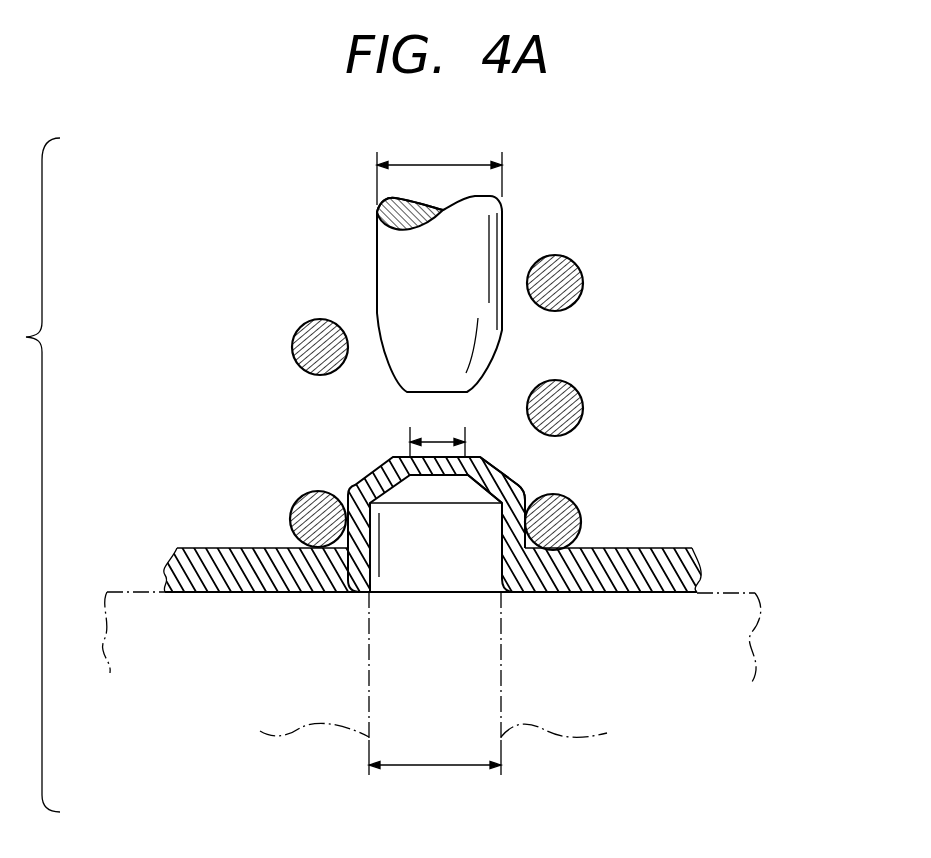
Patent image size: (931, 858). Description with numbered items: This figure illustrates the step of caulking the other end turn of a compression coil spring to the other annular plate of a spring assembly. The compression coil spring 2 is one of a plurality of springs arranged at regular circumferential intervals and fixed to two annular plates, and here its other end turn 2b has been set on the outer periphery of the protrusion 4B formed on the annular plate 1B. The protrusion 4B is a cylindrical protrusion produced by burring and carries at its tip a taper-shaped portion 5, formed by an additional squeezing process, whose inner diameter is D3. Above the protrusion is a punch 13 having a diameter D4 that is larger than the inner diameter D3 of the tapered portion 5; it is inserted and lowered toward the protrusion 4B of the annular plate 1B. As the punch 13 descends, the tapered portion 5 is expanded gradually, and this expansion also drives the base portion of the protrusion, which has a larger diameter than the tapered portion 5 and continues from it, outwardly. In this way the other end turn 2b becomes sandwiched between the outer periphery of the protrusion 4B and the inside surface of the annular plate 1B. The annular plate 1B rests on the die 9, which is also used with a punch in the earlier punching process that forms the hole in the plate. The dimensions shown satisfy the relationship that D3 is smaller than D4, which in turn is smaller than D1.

The punch 13 is at (381, 259).
The compression coil spring 2 is at (292, 350).
The other end turn 2b is at (577, 523).
The taper-shaped portion 5 is at (382, 468).
The protrusion 4B is at (503, 480).
The annular plate 1B is at (210, 556).
The die 9 is at (283, 722).
The diameter D1 is at (435, 769).
The inner diameter D3 is at (437, 434).
The diameter D4 is at (439, 170).